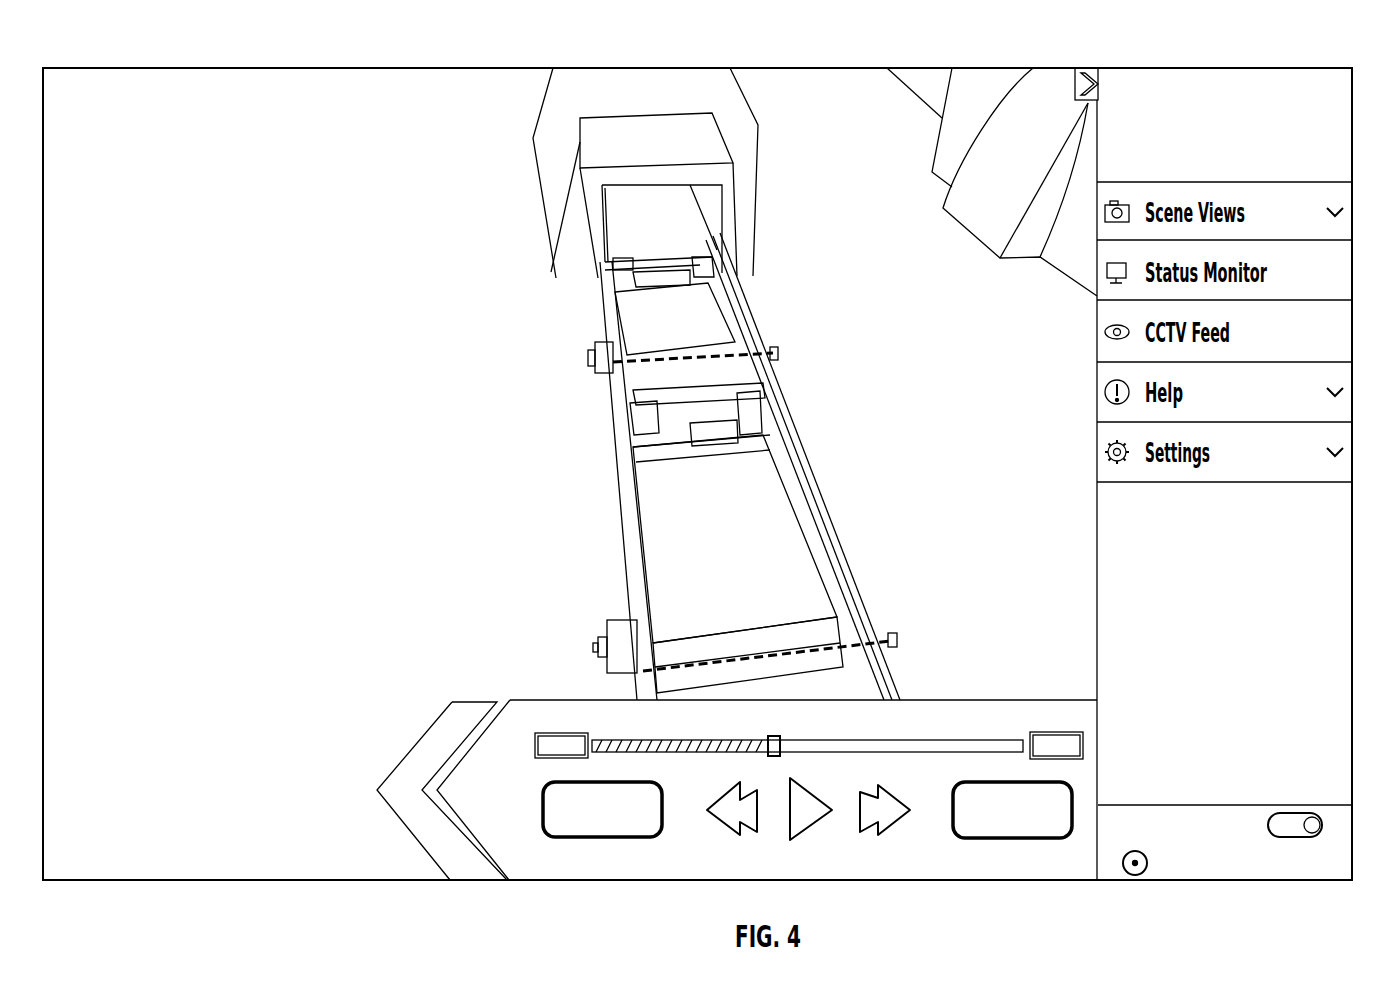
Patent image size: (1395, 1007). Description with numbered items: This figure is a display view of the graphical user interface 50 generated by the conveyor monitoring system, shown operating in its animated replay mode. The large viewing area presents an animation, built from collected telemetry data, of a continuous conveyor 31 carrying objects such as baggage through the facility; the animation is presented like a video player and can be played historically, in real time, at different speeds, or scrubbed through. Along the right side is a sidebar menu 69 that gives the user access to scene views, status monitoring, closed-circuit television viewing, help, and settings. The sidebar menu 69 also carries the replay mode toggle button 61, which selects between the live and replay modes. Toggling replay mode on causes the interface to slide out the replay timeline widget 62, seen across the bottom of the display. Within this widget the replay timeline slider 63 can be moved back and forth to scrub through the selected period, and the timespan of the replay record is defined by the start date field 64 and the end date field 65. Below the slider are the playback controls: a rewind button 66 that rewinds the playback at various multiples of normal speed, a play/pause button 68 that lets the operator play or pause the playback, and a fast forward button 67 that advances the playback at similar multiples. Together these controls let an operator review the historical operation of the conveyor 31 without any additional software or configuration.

The graphical user interface 50 is at (1323, 59).
The continuous conveyor 31 is at (797, 507).
The replay mode toggle button 61 is at (1325, 825).
The replay timeline widget 62 is at (383, 723).
The replay timeline slider 63 is at (943, 742).
The start date field 64 is at (543, 833).
The end date field 65 is at (1065, 838).
The rewind button 66 is at (720, 826).
The fast forward button 67 is at (895, 826).
The play/pause button 68 is at (815, 832).
The sidebar menu 69 is at (1352, 542).